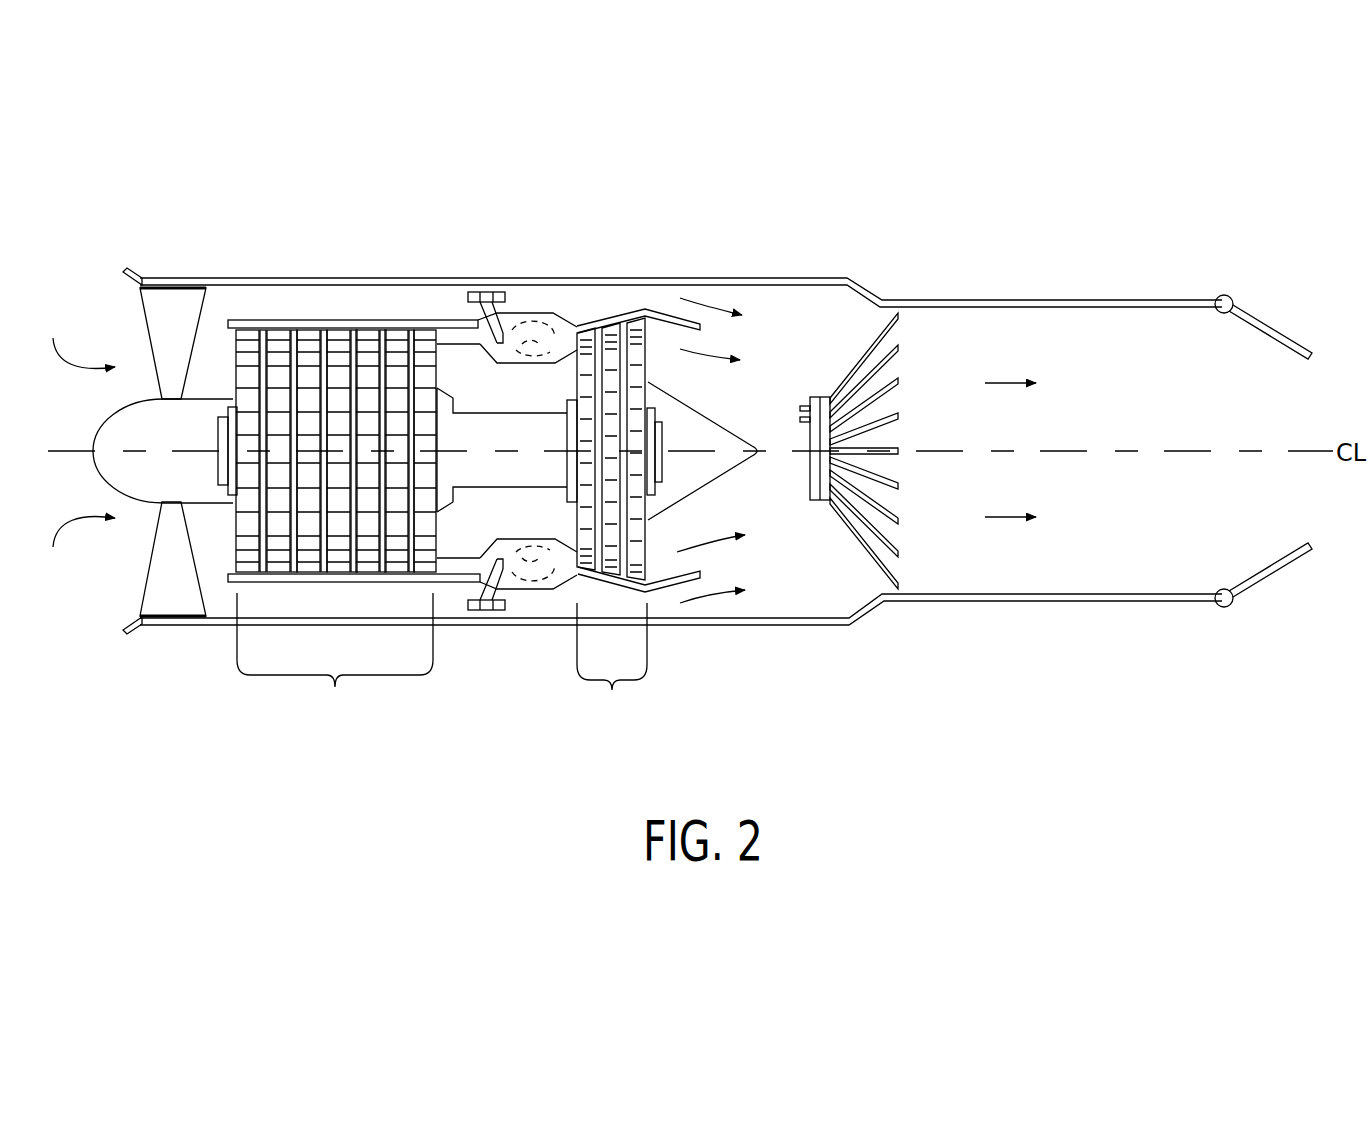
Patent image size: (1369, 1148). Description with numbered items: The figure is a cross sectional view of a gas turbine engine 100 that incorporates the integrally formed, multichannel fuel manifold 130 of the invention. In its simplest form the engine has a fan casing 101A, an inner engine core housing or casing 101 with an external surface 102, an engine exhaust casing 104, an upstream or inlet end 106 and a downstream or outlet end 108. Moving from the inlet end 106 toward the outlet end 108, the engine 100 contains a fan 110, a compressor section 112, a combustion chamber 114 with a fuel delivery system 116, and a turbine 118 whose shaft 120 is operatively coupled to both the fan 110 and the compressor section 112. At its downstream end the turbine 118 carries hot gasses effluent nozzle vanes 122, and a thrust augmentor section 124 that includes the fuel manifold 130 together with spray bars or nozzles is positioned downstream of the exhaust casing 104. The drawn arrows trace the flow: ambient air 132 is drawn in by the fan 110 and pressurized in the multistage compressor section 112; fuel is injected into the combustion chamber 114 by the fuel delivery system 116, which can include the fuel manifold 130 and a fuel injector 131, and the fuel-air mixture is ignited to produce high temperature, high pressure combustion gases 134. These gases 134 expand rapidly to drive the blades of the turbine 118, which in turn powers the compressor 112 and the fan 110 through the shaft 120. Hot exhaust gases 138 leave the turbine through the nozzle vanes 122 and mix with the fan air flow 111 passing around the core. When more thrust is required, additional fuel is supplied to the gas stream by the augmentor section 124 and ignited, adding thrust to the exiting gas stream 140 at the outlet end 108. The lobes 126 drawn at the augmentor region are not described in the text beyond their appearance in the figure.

The gas turbine engine 100 is at (230, 224).
The inner engine core housing 101 is at (298, 317).
The fan casing 101A is at (331, 276).
The external surface 102 is at (434, 312).
The engine exhaust casing 104 is at (686, 329).
The upstream end 106 is at (141, 275).
The downstream end 108 is at (1273, 328).
The fan 110 is at (166, 584).
The fan air flow 111 is at (711, 313).
The compressor section 112 is at (335, 659).
The combustion chamber 114 is at (543, 582).
The fuel delivery system 116 is at (487, 628).
The turbine 118 is at (612, 665).
The shaft 120 is at (481, 406).
The hot gasses effluent nozzle vanes 122 is at (658, 393).
The thrust augmentor section 124 is at (862, 338).
The mixer lobes 126 is at (896, 550).
The multichannel fuel manifold 130 is at (487, 279).
The fuel injector 131 is at (502, 323).
The ambient air 132 is at (76, 444).
The combustion gases 134 is at (571, 555).
The hot exhaust gases 138 is at (708, 534).
The exiting gas stream 140 is at (1008, 378).